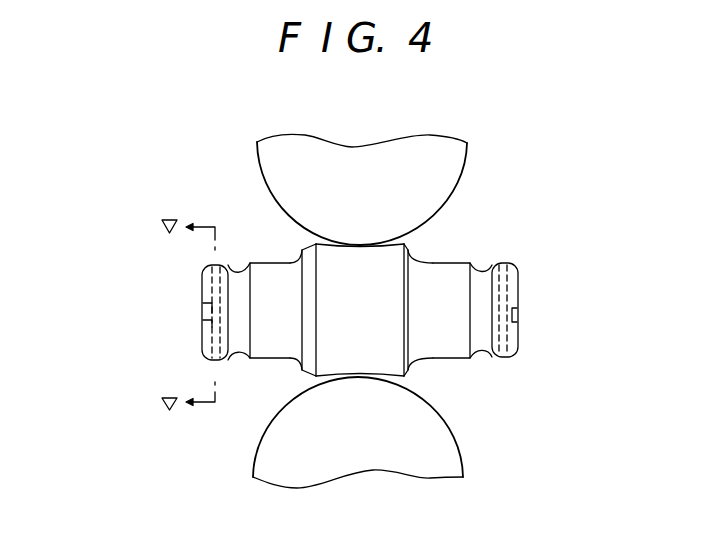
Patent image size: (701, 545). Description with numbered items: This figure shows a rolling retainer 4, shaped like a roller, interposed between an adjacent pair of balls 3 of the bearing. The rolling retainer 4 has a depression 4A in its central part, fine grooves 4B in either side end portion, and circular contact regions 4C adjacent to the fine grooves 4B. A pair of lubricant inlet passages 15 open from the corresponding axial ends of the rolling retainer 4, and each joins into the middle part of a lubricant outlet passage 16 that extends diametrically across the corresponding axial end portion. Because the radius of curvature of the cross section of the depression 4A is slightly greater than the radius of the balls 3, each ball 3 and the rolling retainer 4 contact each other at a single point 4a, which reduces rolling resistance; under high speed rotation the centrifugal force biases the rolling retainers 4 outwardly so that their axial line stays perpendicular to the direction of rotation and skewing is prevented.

The ball 3 is at (437, 180).
The rolling retainer 4 is at (349, 317).
The single contact point 4a is at (353, 243).
The depression 4A is at (355, 317).
The fine grooves 4B is at (238, 340).
The circular contact regions 4C is at (349, 295).
The lubricant inlet passages 15 is at (205, 317).
The lubricant outlet passage 16 is at (217, 277).